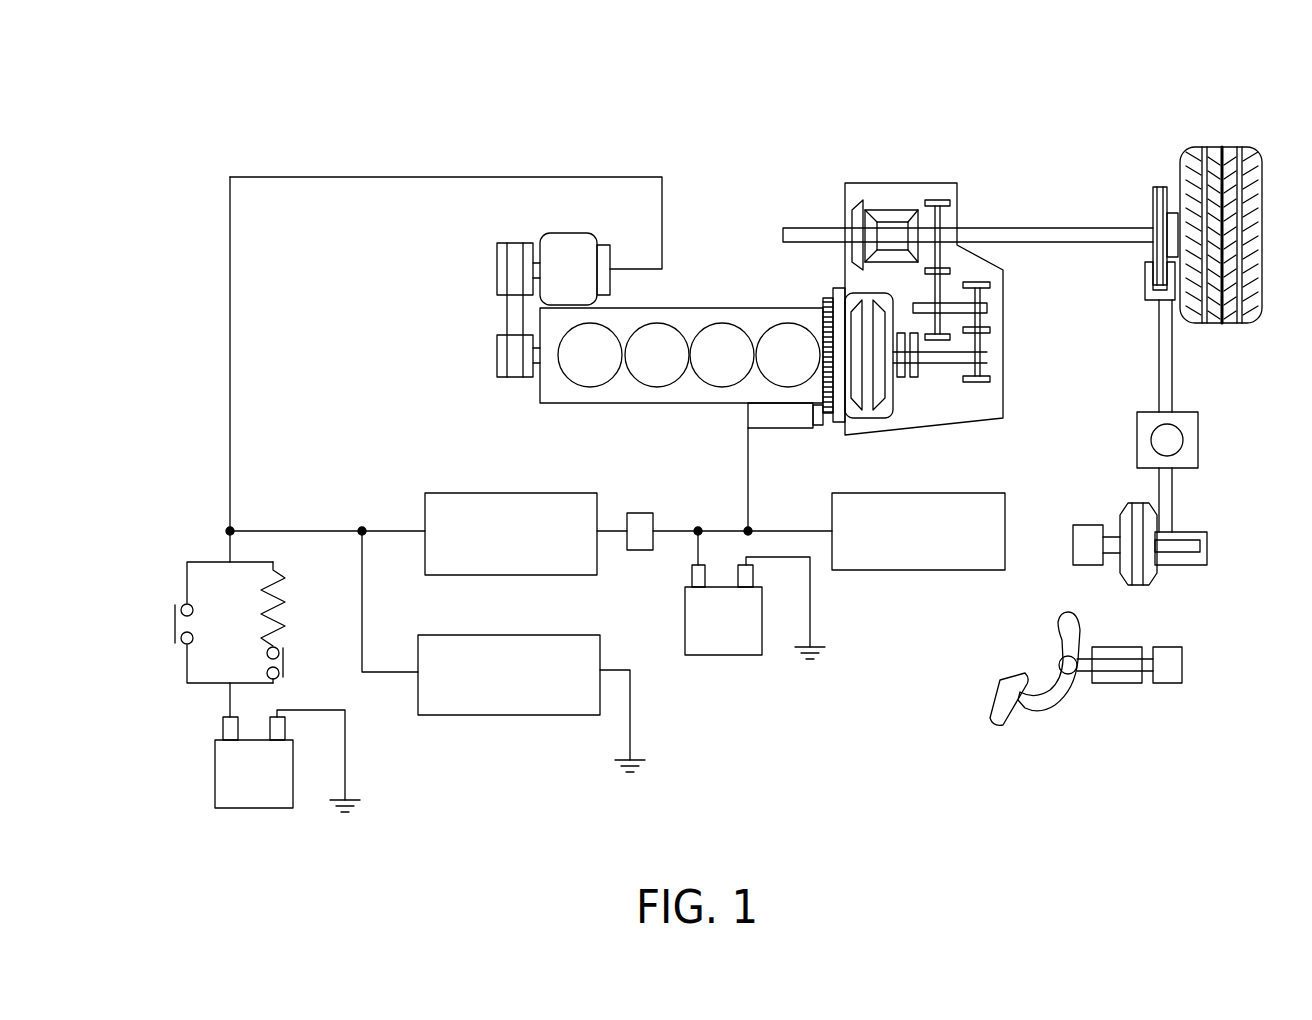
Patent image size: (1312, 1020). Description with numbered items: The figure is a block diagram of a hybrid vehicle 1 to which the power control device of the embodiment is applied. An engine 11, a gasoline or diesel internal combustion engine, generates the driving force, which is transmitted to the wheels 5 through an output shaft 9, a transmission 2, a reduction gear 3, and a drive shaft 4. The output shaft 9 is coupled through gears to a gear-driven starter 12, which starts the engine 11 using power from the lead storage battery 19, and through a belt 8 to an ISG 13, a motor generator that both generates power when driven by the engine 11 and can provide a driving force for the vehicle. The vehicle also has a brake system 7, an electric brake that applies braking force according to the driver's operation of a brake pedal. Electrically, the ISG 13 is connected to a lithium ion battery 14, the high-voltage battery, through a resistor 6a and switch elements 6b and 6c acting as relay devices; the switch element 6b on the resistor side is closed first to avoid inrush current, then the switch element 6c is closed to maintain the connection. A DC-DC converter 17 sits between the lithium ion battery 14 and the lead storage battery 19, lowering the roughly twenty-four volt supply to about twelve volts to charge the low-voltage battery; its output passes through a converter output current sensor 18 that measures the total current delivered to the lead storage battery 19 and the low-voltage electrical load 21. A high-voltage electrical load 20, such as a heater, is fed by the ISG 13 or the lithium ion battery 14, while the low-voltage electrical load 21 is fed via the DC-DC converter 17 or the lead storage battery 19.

The hybrid vehicle 1 is at (747, 83).
The transmission 2 is at (935, 398).
The reduction gear 3 is at (892, 209).
The drive shaft 4 is at (1040, 227).
The wheels 5 is at (1215, 146).
The resistor 6a is at (287, 600).
The switch element 6b is at (285, 665).
The switch element 6c is at (175, 622).
The brake system 7 is at (1212, 610).
The belt 8 is at (497, 300).
The output shaft 9 is at (497, 342).
The engine 11 is at (713, 307).
The gear-driven starter 12 is at (772, 430).
The ISG 13 is at (575, 232).
The lithium ion battery 14 is at (252, 808).
The DC-DC converter 17 is at (507, 493).
The converter output current sensor 18 is at (645, 513).
The lead storage battery 19 is at (720, 655).
The high-voltage electrical load 20 is at (505, 715).
The low-voltage electrical load 21 is at (918, 570).